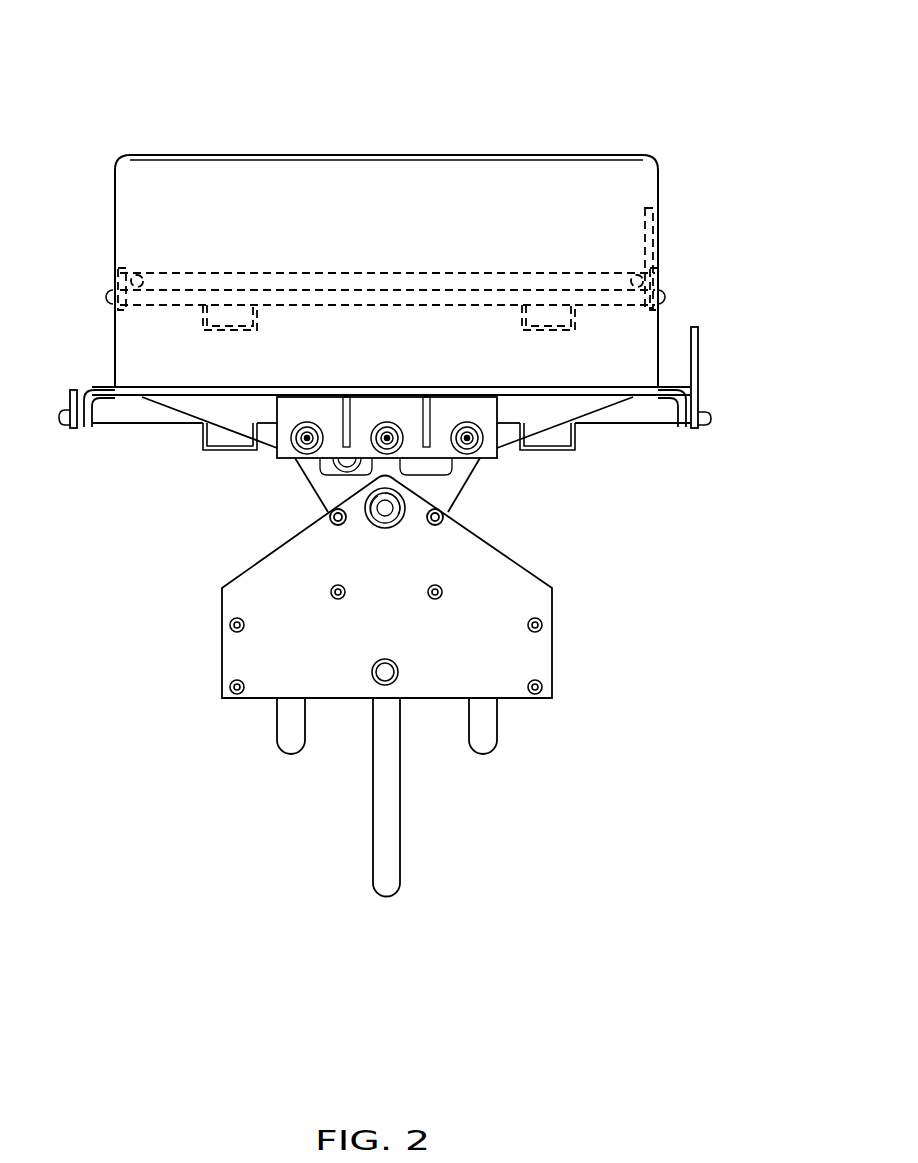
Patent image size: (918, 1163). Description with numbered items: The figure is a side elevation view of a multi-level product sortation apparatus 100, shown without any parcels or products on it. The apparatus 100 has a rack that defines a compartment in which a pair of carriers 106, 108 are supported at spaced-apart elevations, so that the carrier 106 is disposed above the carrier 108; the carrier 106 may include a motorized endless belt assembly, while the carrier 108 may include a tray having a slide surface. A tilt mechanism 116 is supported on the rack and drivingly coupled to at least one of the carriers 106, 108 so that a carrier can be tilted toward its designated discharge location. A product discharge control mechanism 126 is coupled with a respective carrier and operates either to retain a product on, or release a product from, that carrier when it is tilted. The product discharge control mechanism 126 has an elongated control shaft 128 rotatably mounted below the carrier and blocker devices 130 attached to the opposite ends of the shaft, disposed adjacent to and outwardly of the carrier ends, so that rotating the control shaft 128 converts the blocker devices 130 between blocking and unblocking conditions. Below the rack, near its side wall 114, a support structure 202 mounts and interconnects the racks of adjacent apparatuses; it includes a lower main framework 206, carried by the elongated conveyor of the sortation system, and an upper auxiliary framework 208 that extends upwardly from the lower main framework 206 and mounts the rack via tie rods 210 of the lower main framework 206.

The multi-level product sortation apparatus 100 is at (704, 102).
The carrier 106 is at (343, 273).
The carrier 108 is at (670, 390).
The side wall 114 is at (507, 185).
The tilt mechanism 116 is at (371, 432).
The product discharge control mechanism 126 is at (660, 283).
The elongated control shaft 128 is at (598, 307).
The blocker device 130 is at (660, 245).
The support structure 202 is at (268, 678).
The lower main framework 206 is at (712, 397).
The upper auxiliary framework 208 is at (458, 475).
The tie rod 210 is at (435, 526).